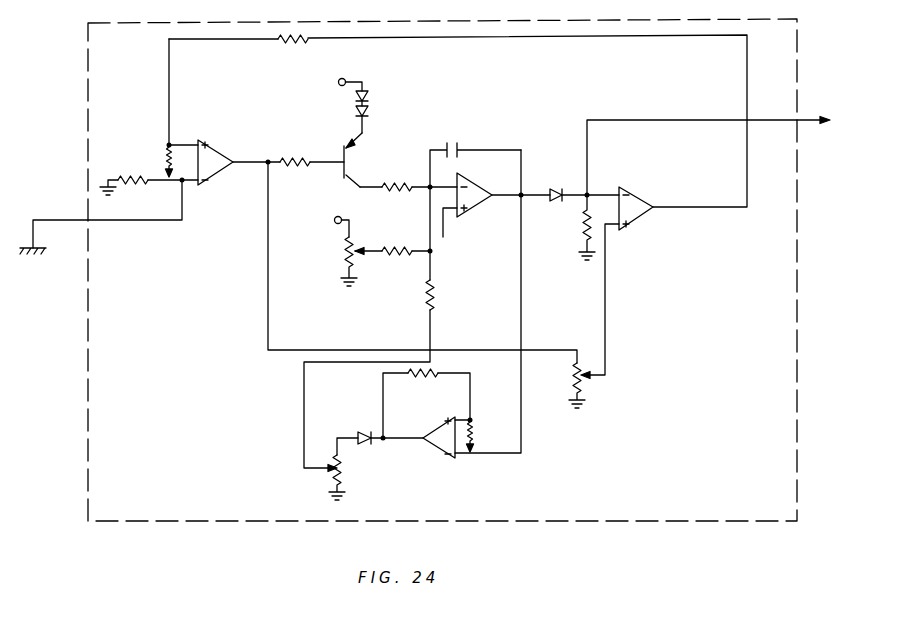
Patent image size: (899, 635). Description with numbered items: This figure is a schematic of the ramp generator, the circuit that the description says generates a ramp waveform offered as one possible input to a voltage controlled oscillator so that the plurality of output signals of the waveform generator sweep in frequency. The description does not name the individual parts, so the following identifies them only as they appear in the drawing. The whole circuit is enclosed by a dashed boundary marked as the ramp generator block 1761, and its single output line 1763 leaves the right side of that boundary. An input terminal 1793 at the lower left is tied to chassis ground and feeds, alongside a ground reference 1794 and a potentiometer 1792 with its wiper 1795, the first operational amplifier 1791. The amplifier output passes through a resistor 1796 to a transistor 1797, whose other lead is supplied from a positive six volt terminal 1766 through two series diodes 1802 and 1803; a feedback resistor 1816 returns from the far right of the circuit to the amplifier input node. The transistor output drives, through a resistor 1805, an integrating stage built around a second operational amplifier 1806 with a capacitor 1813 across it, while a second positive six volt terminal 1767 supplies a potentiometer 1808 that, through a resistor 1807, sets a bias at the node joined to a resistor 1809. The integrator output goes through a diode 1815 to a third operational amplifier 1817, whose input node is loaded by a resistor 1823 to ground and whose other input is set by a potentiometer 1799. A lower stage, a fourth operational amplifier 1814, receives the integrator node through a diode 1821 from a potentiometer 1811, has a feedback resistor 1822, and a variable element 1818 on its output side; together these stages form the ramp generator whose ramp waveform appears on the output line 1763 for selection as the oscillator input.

The circuit module (dashed enclosure) 1761 is at (794, 193).
The output line 1763 is at (800, 124).
The +6V supply terminal 1766 is at (332, 86).
The +6V supply terminal 1767 is at (334, 221).
The operational amplifier 1791 is at (210, 158).
The potentiometer 1792 is at (118, 178).
The chassis ground / input terminal 1793 is at (42, 249).
The ground 1794 is at (113, 197).
The wiper arm 1795 is at (169, 143).
The resistor 1796 is at (292, 160).
The transistor 1797 is at (344, 172).
The potentiometer 1799 is at (586, 386).
The diode 1802 is at (354, 102).
The diode 1803 is at (368, 111).
The resistor 1805 is at (410, 175).
The operational amplifier 1806 is at (475, 187).
The resistor 1807 is at (400, 230).
The potentiometer 1808 is at (336, 254).
The resistor 1809 is at (434, 296).
The potentiometer 1811 is at (338, 471).
The capacitor 1813 is at (464, 146).
The operational amplifier 1814 is at (442, 429).
The diode 1815 is at (550, 185).
The resistor 1816 is at (289, 42).
The operational amplifier 1817 is at (632, 188).
The variable resistor 1818 is at (490, 423).
The diode 1821 is at (360, 434).
The resistor 1822 is at (424, 377).
The resistor 1823 is at (584, 230).